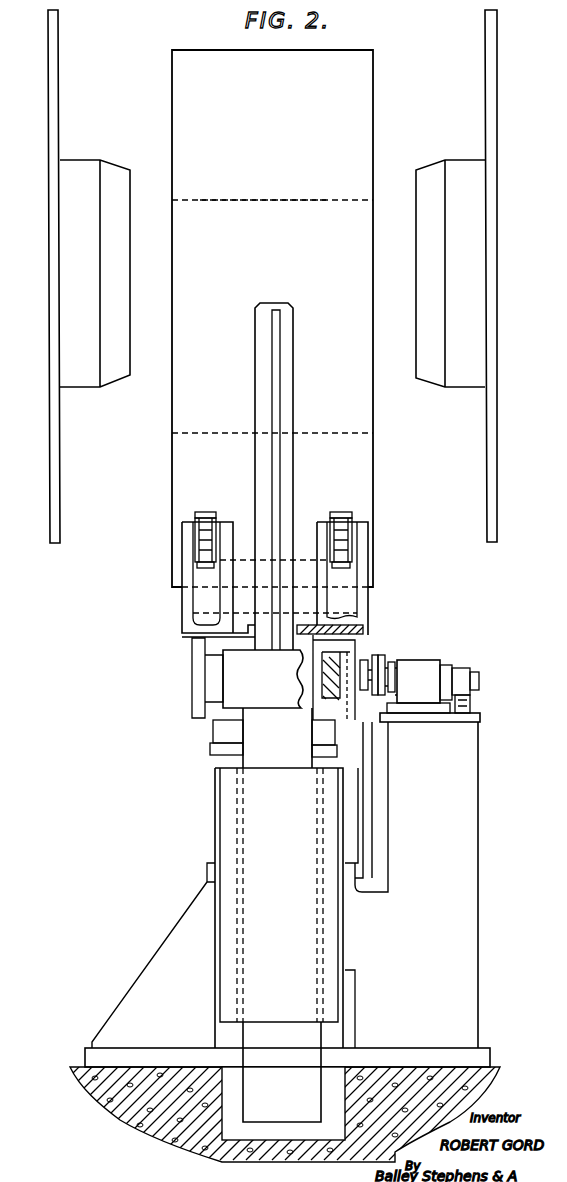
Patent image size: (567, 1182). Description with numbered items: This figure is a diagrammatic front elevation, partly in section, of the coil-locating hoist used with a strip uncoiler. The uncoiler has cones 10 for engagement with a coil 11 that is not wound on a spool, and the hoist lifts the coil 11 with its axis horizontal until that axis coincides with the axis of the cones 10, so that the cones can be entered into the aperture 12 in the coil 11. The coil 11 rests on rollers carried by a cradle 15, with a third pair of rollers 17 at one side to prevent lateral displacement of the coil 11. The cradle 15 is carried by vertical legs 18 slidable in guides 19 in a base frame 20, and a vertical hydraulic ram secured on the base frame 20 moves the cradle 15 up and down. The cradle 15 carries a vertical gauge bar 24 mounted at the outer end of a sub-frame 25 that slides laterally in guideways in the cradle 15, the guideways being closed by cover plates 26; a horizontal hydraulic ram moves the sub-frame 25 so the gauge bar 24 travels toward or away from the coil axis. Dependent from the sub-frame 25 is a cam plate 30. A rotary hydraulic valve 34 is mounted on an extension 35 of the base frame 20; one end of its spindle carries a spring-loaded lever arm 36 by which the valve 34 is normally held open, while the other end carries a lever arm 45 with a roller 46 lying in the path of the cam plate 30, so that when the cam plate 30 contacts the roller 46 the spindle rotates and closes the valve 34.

The cones 10 is at (77, 170).
The coil 11 is at (350, 117).
The aperture 12 is at (257, 212).
The cradle 15 is at (355, 632).
The third pair of rollers 17 is at (204, 532).
The vertical legs 18 is at (255, 742).
The guides 19 is at (227, 925).
The base frame 20 is at (145, 1055).
The vertical gauge bar 24 is at (275, 363).
The sub-frame 25 is at (243, 690).
The cover plates 26 is at (200, 660).
The cam plate 30 is at (366, 790).
The rotary hydraulic valve 34 is at (415, 672).
The extension 35 is at (460, 860).
The spring-loaded lever arm 36 is at (483, 672).
The lever arm 45 is at (378, 670).
The roller 46 is at (363, 660).